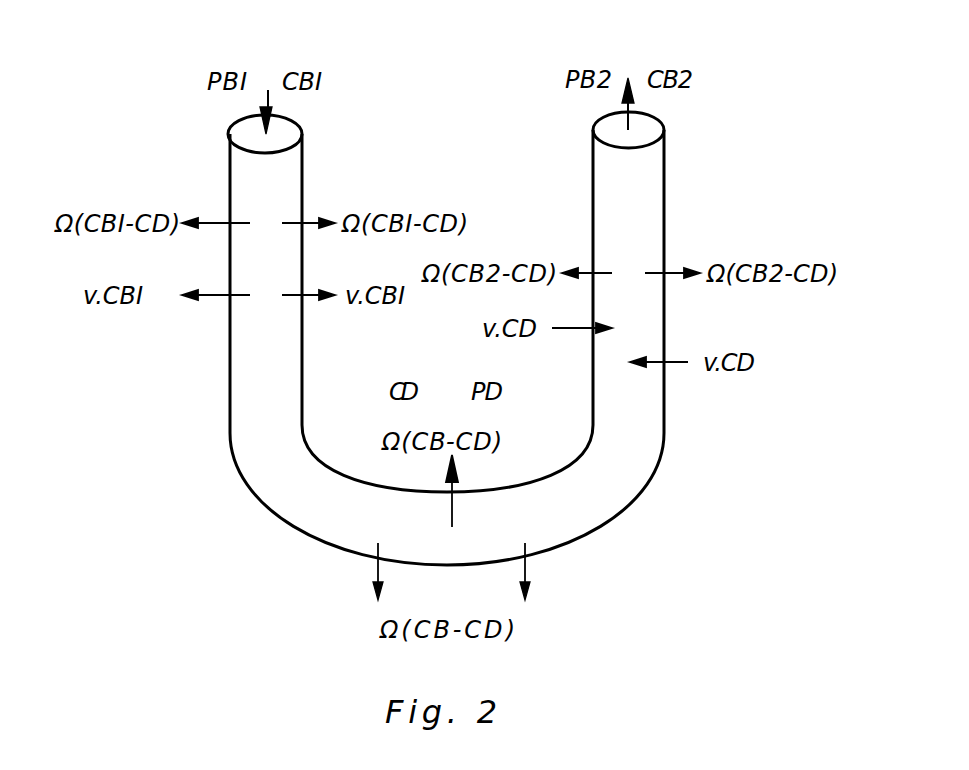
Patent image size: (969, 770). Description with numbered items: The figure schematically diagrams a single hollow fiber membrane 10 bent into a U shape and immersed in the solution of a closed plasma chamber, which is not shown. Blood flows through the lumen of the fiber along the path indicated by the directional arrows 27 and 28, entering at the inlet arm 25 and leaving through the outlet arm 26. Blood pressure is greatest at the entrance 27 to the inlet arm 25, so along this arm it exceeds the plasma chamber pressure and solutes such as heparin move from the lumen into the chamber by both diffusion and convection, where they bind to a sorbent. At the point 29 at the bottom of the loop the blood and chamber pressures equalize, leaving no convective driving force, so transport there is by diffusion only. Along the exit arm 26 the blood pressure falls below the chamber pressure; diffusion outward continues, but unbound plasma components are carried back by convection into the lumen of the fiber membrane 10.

The hollow fiber membrane 10 is at (642, 496).
The inlet arm 25 is at (229, 160).
The outlet arm 26 is at (665, 162).
The directional arrow 27 is at (268, 90).
The directional arrow 28 is at (629, 76).
The point where PB equals PD 29 is at (440, 565).